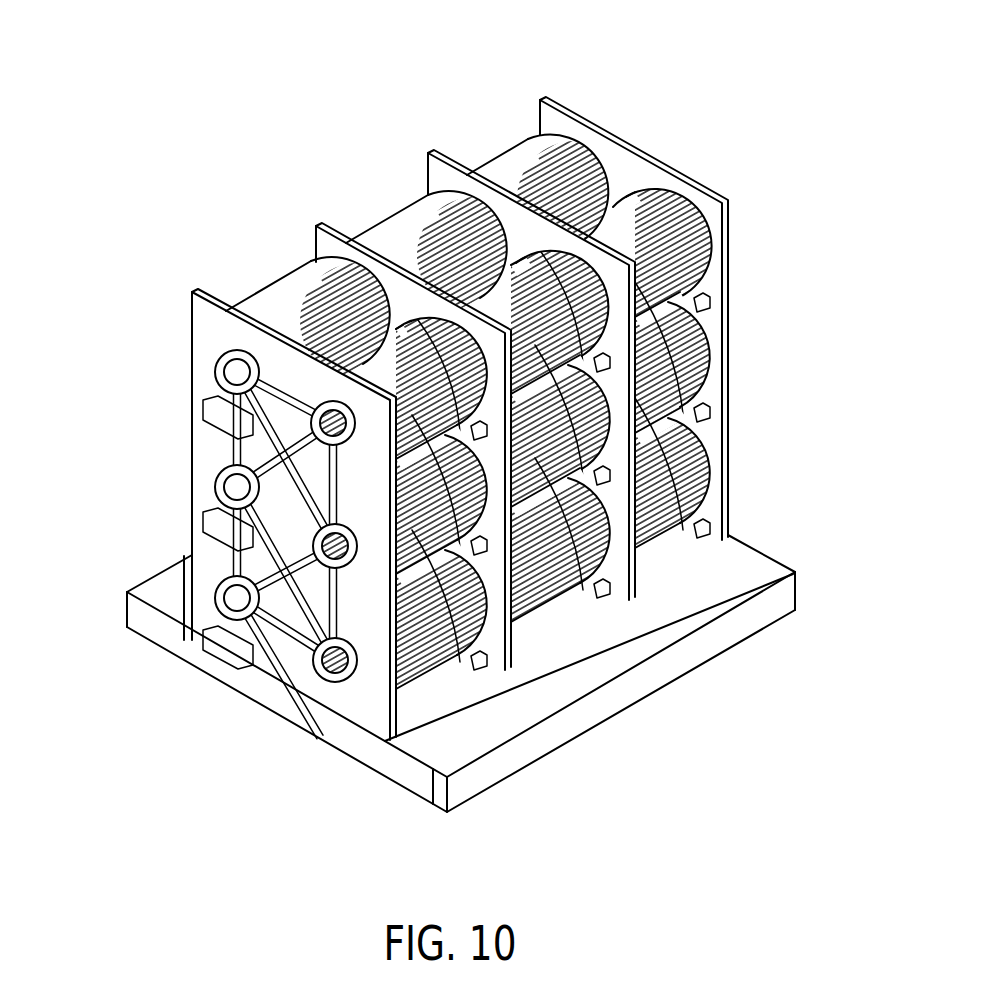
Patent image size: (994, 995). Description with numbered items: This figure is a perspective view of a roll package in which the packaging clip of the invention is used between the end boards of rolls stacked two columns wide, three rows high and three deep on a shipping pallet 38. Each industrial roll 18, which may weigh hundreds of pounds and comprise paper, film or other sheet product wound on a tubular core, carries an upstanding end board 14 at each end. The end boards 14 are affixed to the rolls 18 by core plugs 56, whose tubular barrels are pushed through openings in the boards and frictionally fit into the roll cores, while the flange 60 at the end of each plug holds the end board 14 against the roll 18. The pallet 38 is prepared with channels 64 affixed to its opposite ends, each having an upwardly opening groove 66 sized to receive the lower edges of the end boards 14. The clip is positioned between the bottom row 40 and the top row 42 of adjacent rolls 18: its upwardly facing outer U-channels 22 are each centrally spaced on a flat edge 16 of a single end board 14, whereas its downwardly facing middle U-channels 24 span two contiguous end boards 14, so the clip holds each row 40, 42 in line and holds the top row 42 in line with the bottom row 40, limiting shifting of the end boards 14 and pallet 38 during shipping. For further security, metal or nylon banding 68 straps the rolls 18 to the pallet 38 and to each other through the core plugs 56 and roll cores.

The end board 14 is at (200, 332).
The edge 16 is at (713, 313).
The roll 18 is at (298, 296).
The outer U-channel 22 is at (212, 420).
The middle U-channel 24 is at (262, 452).
The pallet 38 is at (650, 680).
The bottom row 40 is at (168, 549).
The top row 42 is at (172, 262).
The core plug 56 is at (218, 612).
The flange 60 is at (232, 350).
The channel 64 is at (720, 393).
The groove 66 is at (255, 650).
The banding 68 is at (258, 352).